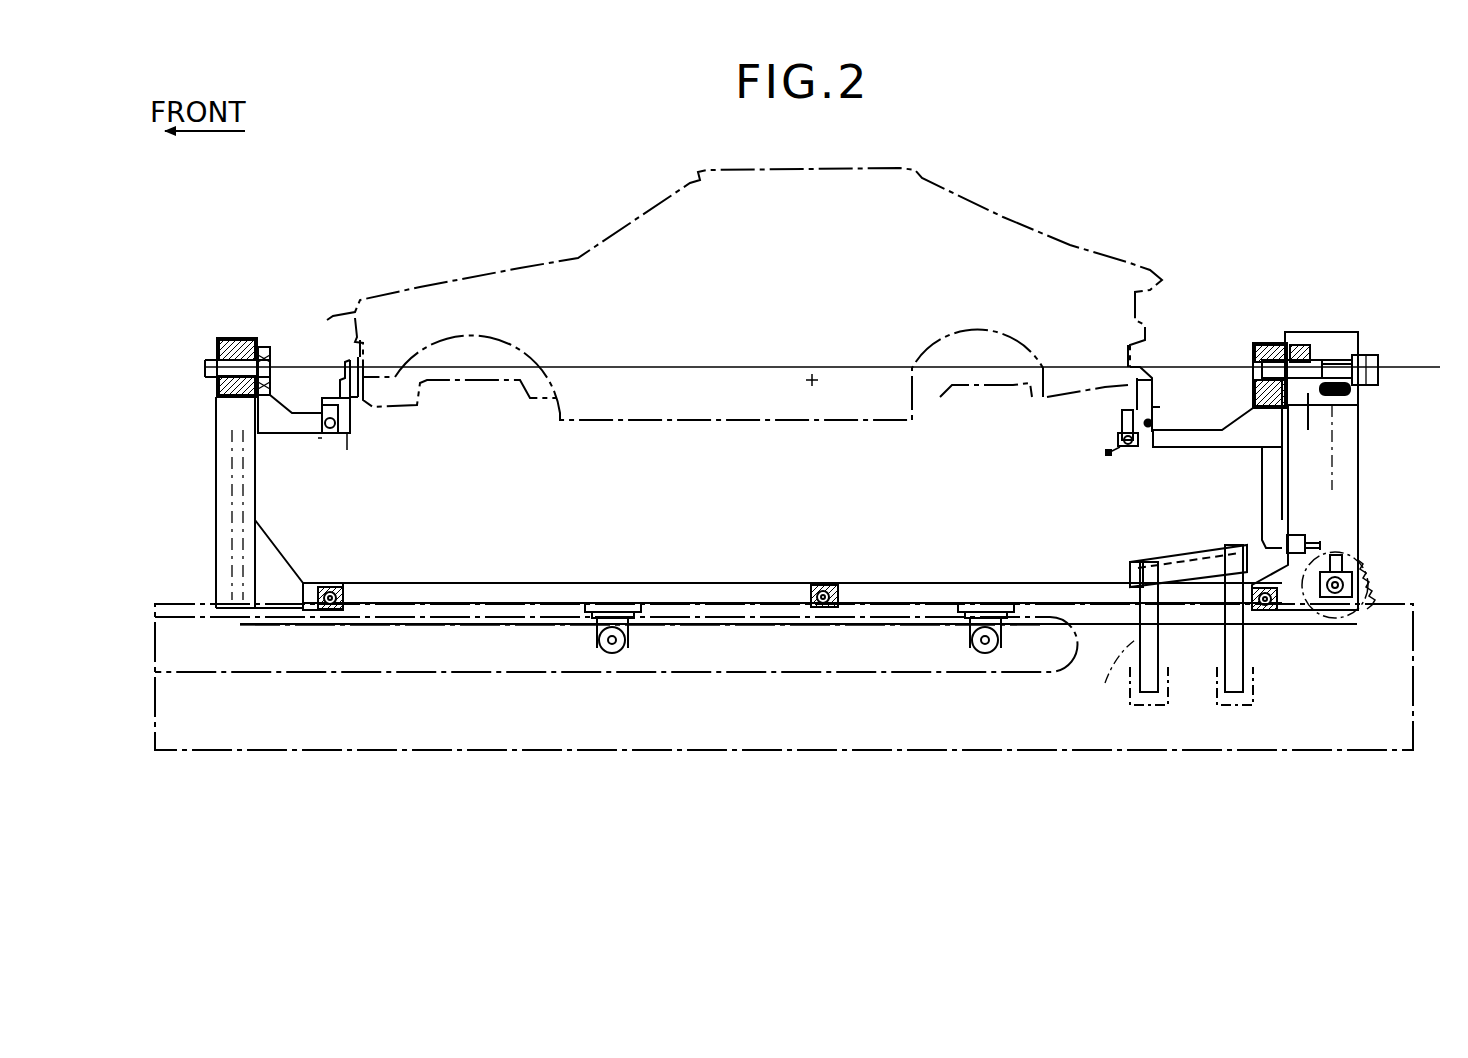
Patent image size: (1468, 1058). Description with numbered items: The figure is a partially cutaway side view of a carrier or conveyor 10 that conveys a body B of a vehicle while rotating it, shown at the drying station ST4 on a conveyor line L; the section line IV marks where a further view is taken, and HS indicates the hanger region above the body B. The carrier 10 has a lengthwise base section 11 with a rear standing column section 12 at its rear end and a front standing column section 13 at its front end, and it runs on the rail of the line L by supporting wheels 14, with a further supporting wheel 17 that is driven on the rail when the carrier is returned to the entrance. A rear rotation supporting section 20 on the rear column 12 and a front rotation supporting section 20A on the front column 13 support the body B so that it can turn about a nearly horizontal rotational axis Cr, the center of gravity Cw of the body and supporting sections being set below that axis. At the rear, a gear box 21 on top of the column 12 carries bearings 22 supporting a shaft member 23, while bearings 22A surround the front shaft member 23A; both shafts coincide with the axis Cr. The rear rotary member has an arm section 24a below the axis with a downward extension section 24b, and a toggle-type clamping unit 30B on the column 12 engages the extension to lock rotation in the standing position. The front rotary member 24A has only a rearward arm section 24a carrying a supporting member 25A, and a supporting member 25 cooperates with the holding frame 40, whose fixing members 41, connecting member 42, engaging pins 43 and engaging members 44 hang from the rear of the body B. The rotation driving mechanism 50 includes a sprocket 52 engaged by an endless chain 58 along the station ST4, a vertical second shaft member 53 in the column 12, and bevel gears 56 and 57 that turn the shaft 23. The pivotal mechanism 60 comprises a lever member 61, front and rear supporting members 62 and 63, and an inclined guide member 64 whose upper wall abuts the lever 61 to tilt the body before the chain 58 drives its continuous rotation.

The carrier or conveyor 10 is at (1364, 235).
The base section 11 is at (489, 583).
The rear standing column section 12 is at (1360, 540).
The front standing column section 13 is at (215, 452).
The supporting wheel 14 is at (820, 585).
The supporting wheel 17 is at (612, 655).
The rear rotation supporting section 20 is at (1272, 330).
The front rotation supporting section 20A is at (274, 334).
The gear box 21 is at (1350, 352).
The bearings 22 is at (1307, 332).
The bearings 22A is at (246, 338).
The shaft member 23 is at (1308, 396).
The shaft member 23A is at (217, 373).
The rotary member 24A is at (272, 357).
The arm section 24a is at (285, 425).
The extension section 24b is at (1264, 500).
The supporting member 25 is at (1119, 460).
The supporting member 25A is at (347, 440).
The clamping unit 30B is at (1318, 520).
The holding frame 40 is at (360, 413).
The fixing members 41 is at (1155, 394).
The connecting member 42 is at (1137, 423).
The engaging pin 43 is at (1152, 428).
The engaging member 44 is at (1120, 418).
The rotation driving mechanism 50 is at (1354, 395).
The sprocket 52 is at (1352, 612).
The second shaft member 53 is at (1362, 496).
The bevel gear 56 is at (1348, 420).
The bevel gear 57 is at (1362, 389).
The endless chain 58 is at (850, 674).
The pivotal mechanism 60 is at (1272, 650).
The lever member 61 is at (1368, 572).
The front supporting member 62 is at (1252, 650).
The rear supporting member 63 is at (1135, 640).
The guide member 64 is at (1128, 570).
The body of the vehicle B is at (1000, 215).
The hanger station HS is at (1108, 172).
The center of gravity Cw is at (805, 382).
The rotational axis Cr is at (1395, 372).
The conveyor line L is at (1013, 754).
The drying station ST4 is at (807, 762).
The section line IV is at (1345, 310).